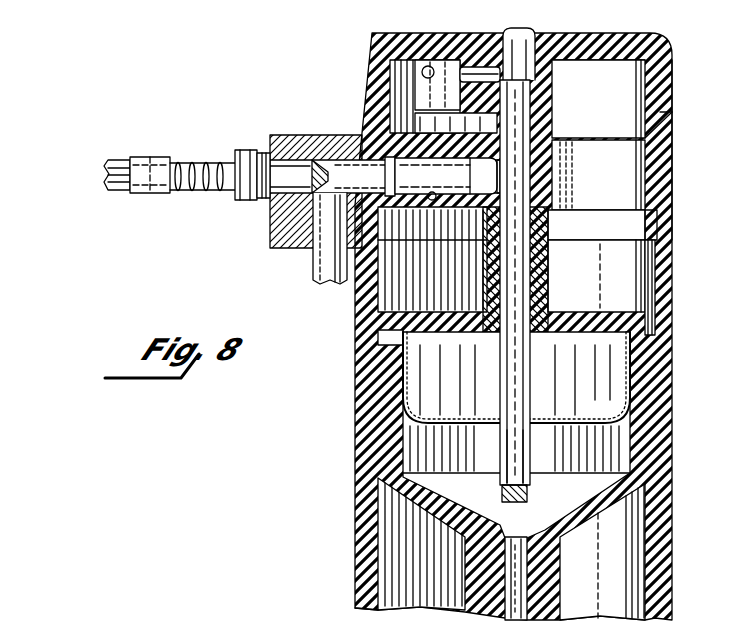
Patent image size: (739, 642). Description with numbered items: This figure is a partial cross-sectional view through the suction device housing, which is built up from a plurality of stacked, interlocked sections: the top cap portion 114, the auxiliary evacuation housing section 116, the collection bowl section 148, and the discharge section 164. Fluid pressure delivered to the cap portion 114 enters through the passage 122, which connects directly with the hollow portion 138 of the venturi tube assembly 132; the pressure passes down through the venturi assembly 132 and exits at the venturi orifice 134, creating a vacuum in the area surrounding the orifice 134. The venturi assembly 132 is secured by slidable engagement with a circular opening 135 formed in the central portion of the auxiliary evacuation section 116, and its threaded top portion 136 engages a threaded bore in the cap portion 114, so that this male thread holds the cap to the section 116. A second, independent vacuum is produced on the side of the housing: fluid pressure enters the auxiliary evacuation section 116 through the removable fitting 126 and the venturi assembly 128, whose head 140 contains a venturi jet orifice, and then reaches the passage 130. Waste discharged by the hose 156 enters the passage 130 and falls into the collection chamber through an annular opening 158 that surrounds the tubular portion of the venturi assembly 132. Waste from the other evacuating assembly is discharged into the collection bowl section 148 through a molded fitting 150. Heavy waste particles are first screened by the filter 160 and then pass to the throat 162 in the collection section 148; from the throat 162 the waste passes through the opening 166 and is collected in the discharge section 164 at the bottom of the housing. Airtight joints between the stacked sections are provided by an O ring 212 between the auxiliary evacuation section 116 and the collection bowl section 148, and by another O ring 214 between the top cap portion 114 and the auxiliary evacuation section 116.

The cap portion of the housing 114 is at (660, 55).
The auxiliary evacuation housing section 116 is at (674, 180).
The passage 122 is at (473, 63).
The fitting 126 is at (247, 210).
The venturi assembly 128 is at (288, 133).
The passage 130 is at (432, 207).
The venturi tube assembly 132 is at (556, 131).
The venturi orifice 134 is at (517, 505).
The circular opening 135 is at (562, 164).
The threaded top portion 136 is at (556, 85).
The hollow portion 138 is at (520, 455).
The head 140 is at (324, 158).
The collection bowl section 148 is at (675, 298).
The molded fitting 150 is at (325, 625).
The hose 156 is at (306, 290).
The annular opening 158 is at (554, 266).
The filter 160 is at (403, 428).
The throat 162 is at (480, 536).
The discharge section of the housing 164 is at (672, 568).
The opening 166 is at (517, 610).
The O ring 212 is at (661, 230).
The O ring 214 is at (664, 119).